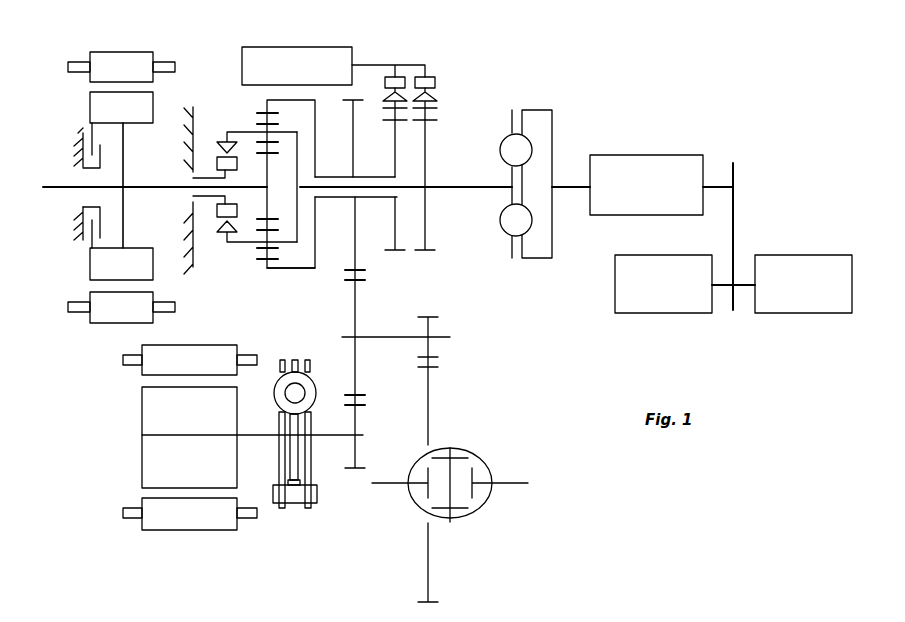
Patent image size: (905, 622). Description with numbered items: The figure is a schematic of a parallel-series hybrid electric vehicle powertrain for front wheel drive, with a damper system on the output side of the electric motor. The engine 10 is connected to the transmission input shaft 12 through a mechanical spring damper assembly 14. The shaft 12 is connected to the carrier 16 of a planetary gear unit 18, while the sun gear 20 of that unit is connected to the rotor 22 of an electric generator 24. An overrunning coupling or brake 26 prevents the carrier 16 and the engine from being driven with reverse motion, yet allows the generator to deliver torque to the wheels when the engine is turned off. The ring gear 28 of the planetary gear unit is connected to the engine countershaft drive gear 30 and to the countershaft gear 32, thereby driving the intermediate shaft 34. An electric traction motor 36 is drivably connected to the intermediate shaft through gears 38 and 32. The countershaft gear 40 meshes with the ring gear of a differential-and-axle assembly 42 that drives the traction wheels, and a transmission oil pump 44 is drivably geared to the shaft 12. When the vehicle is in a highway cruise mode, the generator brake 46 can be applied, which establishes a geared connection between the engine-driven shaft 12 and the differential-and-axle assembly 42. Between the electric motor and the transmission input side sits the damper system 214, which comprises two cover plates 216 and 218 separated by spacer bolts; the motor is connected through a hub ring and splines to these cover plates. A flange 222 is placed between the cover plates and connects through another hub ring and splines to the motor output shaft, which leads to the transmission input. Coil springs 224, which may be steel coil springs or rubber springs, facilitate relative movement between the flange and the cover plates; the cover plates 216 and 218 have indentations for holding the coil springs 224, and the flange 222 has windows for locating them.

The engine 10 is at (673, 155).
The transmission input shaft 12 is at (452, 190).
The mechanical spring damper assembly 14 is at (512, 227).
The carrier 16 is at (242, 130).
The planetary gear unit 18 is at (264, 100).
The sun gear 20 is at (272, 168).
The rotor 22 is at (91, 109).
The electric generator 24 is at (157, 53).
The overrunning coupling or brake 26 is at (220, 142).
The ring gear 28 is at (290, 272).
The engine countershaft drive gear 30 is at (356, 250).
The countershaft gear 32 is at (350, 357).
The intermediate shaft 34 is at (383, 338).
The electric traction motor 36 is at (142, 450).
The gear 38 is at (353, 500).
The countershaft gear 40 is at (428, 350).
The differential-and-axle assembly 42 is at (478, 513).
The transmission oil pump 44 is at (340, 47).
The generator brake 46 is at (85, 206).
The damper system 214 is at (297, 467).
The cover plate 216 is at (311, 475).
The cover plate 218 is at (285, 475).
The flange 222 is at (295, 475).
The coil springs 224 is at (275, 388).